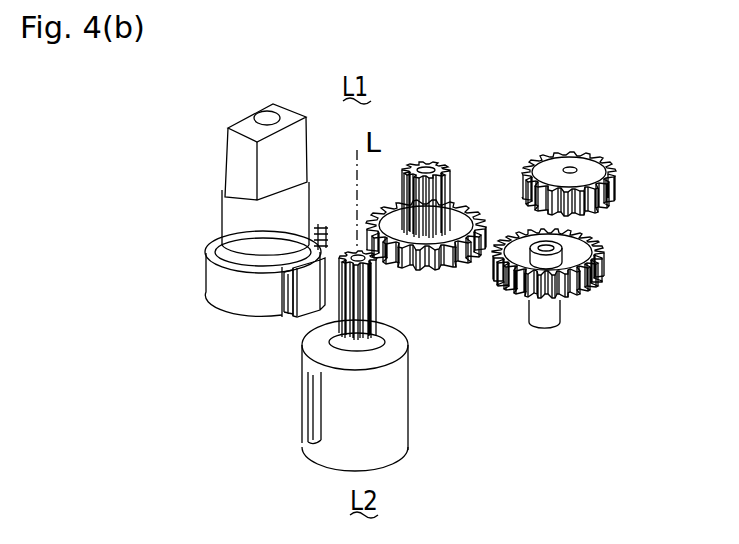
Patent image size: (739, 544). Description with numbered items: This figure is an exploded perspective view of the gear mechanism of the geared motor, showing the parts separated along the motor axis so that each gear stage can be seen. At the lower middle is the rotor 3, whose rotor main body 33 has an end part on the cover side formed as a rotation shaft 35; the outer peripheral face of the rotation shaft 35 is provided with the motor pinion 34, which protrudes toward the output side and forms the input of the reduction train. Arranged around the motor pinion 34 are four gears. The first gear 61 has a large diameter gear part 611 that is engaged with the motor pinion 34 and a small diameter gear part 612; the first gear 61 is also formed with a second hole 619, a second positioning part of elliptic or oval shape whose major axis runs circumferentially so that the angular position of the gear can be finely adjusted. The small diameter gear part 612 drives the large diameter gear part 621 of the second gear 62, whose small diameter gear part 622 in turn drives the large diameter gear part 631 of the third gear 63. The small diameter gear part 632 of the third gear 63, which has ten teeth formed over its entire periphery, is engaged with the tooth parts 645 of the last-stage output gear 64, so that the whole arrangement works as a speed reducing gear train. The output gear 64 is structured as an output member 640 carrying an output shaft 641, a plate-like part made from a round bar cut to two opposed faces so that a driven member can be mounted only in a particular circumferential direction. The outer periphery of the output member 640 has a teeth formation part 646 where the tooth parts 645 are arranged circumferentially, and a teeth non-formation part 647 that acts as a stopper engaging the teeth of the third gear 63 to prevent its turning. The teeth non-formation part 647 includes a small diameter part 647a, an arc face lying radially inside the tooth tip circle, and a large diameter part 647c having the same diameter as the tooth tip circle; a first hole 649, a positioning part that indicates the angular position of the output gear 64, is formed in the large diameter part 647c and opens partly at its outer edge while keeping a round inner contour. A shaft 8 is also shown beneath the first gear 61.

The output gear 64 is at (198, 270).
The output shaft 641 is at (238, 162).
The output member 640 is at (216, 207).
The teeth formation part 646 is at (305, 245).
The tooth part 645 is at (318, 236).
The teeth non-formation part 647 is at (226, 300).
The small diameter part 647a is at (215, 282).
The large diameter part 647c is at (292, 288).
The first hole 649 is at (283, 312).
The rotation shaft 35 is at (399, 312).
The motor pinion 34 is at (376, 287).
The rotor 3 is at (342, 424).
The rotor main body 33 is at (336, 440).
The third gear 63 is at (453, 170).
The small diameter gear part 632 is at (403, 172).
The large diameter gear part 631 is at (456, 262).
The second gear 62 is at (594, 157).
The small diameter gear part 622 is at (552, 203).
The large diameter gear part 621 is at (618, 180).
The first gear 61 is at (575, 250).
The large diameter gear part 611 is at (601, 270).
The second hole 619 is at (523, 246).
The small diameter gear part 612 is at (580, 346).
The shaft 8 is at (562, 307).